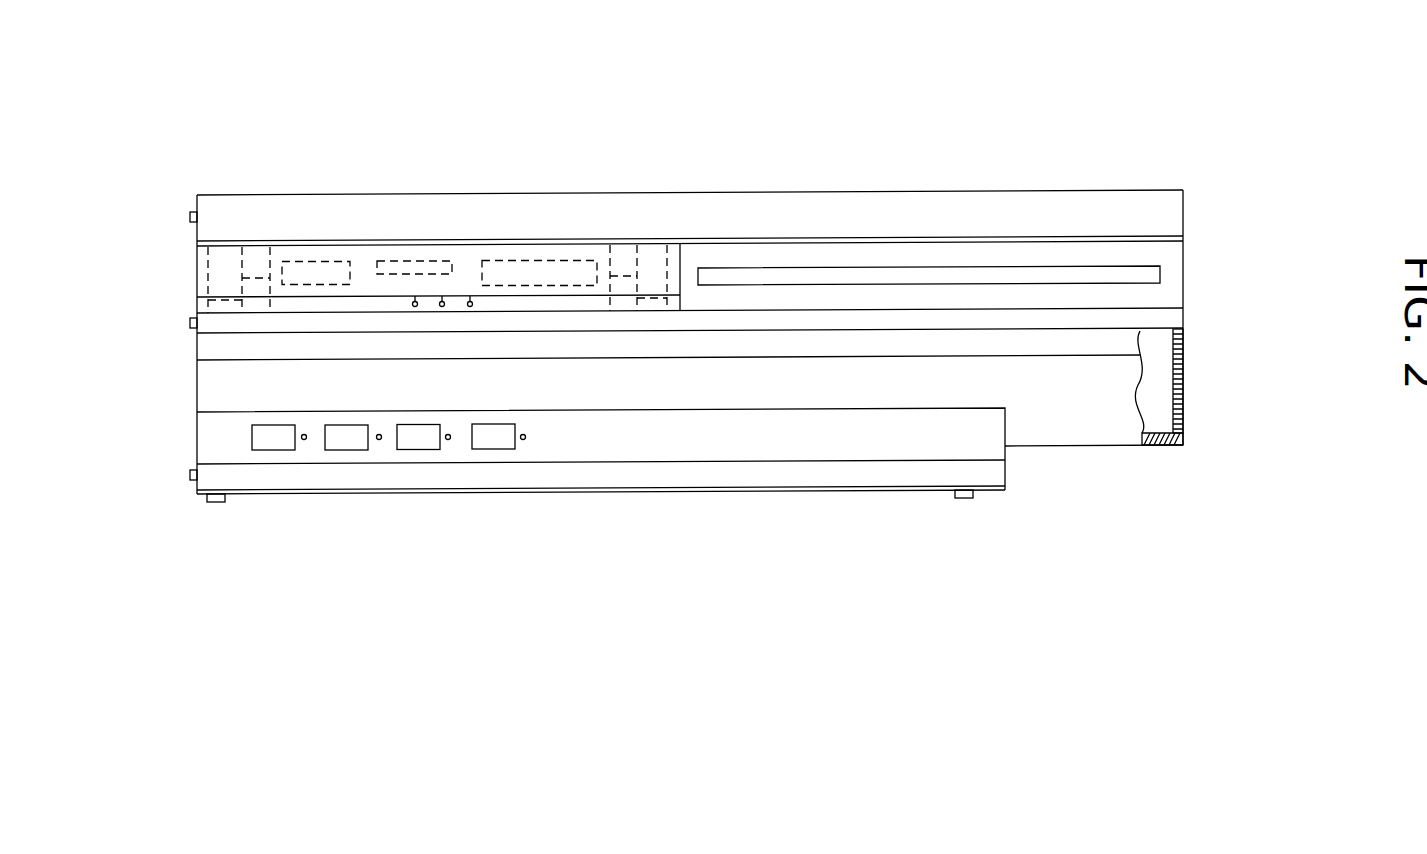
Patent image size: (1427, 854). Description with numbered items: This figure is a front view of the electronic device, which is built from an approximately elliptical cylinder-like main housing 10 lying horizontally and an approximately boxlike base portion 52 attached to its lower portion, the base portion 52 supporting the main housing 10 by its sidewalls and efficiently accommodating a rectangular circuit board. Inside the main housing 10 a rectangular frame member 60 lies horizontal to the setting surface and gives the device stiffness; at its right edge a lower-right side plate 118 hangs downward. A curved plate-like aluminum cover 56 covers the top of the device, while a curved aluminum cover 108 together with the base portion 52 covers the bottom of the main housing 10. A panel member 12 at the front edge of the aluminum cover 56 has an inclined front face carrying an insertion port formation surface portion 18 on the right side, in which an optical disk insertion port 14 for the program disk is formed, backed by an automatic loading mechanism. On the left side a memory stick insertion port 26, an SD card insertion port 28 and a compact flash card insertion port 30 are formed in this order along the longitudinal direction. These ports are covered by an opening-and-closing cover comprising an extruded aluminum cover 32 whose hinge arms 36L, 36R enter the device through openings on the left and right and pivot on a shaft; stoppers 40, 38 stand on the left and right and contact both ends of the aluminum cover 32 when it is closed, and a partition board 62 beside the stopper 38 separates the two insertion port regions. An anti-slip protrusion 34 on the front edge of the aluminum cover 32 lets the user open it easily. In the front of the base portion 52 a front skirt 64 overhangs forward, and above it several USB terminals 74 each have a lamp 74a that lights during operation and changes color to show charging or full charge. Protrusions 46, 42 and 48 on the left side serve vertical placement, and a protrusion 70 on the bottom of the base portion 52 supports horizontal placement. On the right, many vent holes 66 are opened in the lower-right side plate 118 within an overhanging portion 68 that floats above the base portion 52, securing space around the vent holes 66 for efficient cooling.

The main housing 10 is at (1288, 190).
The panel member 12 is at (1182, 238).
The optical disk insertion port 14 is at (1160, 269).
The insertion port formation surface portion 18 is at (1168, 299).
The memory stick insertion port 26 is at (326, 260).
The SD card insertion port 28 is at (408, 260).
The compact flash card insertion port 30 is at (524, 255).
The aluminum cover 32 is at (466, 265).
The anti-slip protrusion 34 is at (415, 307).
The hinge arm 36L is at (254, 257).
The hinge arm 36R is at (628, 255).
The stopper 38 is at (650, 257).
The stopper 40 is at (227, 257).
The protrusion 42 is at (190, 323).
The protrusion 46 is at (190, 217).
The protrusion 48 is at (190, 475).
The base portion 52 is at (796, 505).
The aluminum cover 56 is at (1153, 209).
The frame member 60 is at (1180, 321).
The partition board 62 is at (673, 265).
The front skirt 64 is at (682, 477).
The vent holes 66 is at (1208, 340).
The overhanging portion 68 is at (1173, 461).
The protrusion 70 is at (216, 503).
The USB terminals 74 is at (493, 450).
The lamp 74a is at (523, 434).
The aluminum cover 108 is at (213, 387).
The lower-right side plate 118 is at (1185, 437).